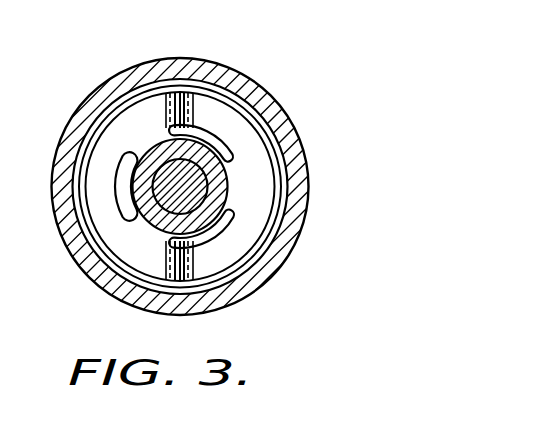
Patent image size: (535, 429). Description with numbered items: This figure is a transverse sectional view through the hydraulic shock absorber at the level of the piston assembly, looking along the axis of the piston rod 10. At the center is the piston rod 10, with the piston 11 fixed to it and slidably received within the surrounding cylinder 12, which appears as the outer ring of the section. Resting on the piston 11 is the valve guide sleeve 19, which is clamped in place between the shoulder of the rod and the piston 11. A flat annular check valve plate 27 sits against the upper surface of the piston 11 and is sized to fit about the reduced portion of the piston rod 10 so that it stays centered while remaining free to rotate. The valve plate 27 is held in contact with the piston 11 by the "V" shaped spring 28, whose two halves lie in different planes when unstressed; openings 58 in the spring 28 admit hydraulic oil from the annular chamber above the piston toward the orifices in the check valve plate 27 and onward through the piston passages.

The piston rod 10 is at (167, 203).
The valve guide sleeve 19 is at (152, 160).
The "V" shaped spring 28 is at (205, 103).
The openings 58 is at (207, 132).
The cylinder 12 is at (282, 115).
The check valve plate 27 is at (270, 162).
The piston 11 is at (280, 195).